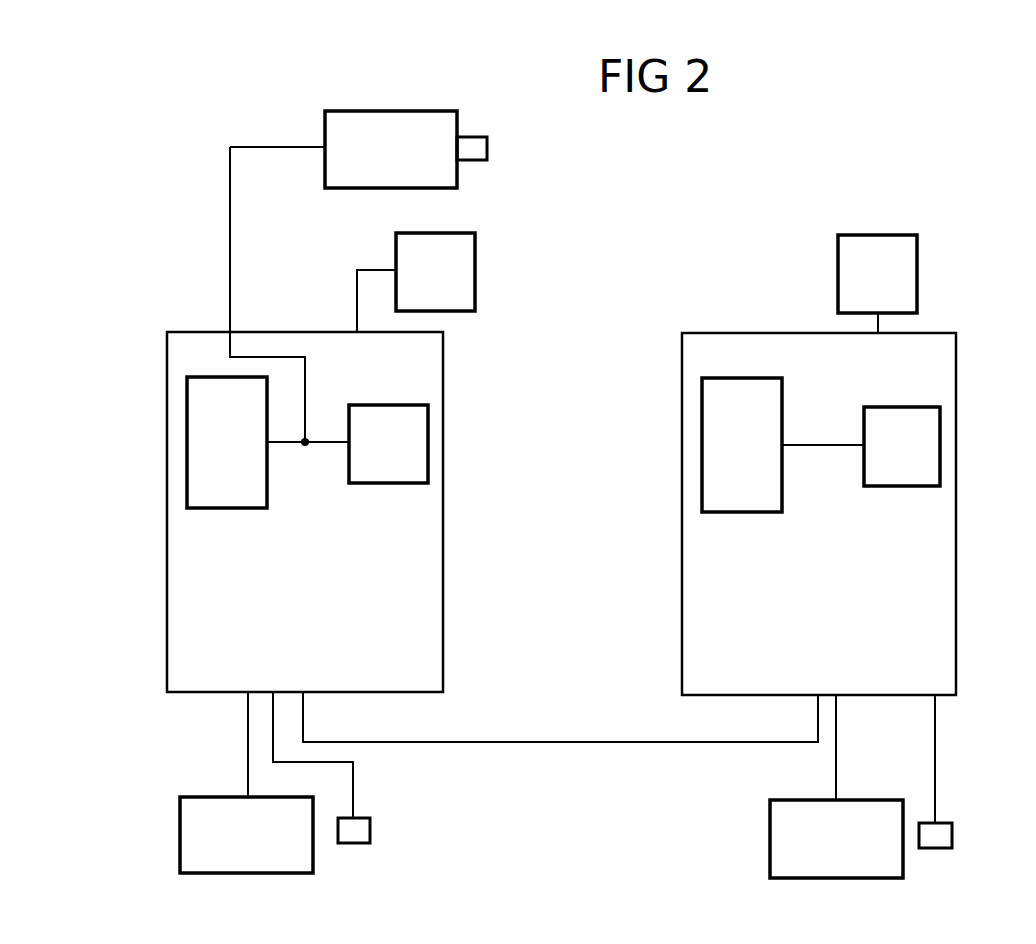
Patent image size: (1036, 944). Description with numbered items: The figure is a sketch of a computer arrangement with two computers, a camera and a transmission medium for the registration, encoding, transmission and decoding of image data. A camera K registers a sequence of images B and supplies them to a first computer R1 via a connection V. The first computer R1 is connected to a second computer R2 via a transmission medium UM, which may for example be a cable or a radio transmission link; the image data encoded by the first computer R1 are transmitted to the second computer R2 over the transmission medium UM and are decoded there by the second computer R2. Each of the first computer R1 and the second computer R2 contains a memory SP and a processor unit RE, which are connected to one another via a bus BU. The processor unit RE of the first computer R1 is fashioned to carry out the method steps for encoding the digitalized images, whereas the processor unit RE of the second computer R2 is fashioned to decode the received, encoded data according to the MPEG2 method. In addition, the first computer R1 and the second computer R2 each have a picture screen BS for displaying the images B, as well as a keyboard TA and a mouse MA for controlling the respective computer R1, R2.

The camera K is at (382, 118).
The images B is at (266, 146).
The connection V is at (228, 228).
The first computer R1 is at (314, 335).
The second computer R2 is at (752, 338).
The picture screen BS is at (468, 268).
The processor unit RE is at (222, 508).
The bus BU is at (285, 445).
The memory SP is at (388, 483).
The keyboard TA is at (190, 838).
The mouse MA is at (360, 833).
The transmission medium UM is at (542, 745).